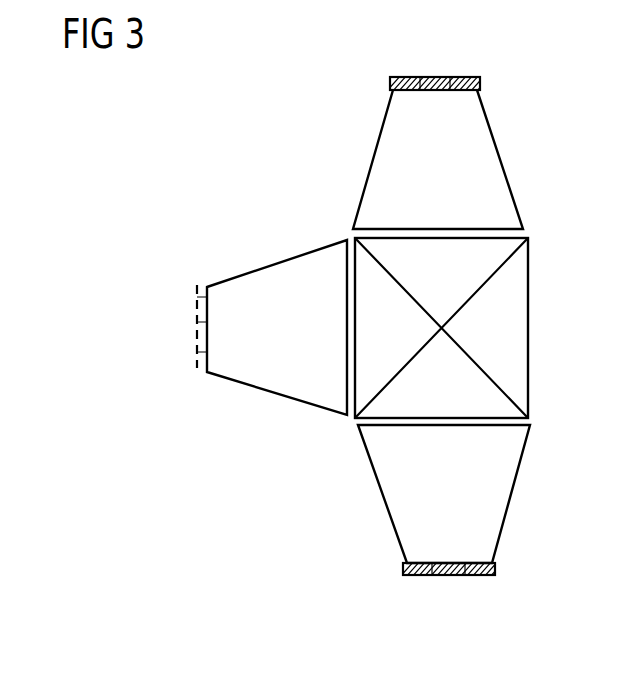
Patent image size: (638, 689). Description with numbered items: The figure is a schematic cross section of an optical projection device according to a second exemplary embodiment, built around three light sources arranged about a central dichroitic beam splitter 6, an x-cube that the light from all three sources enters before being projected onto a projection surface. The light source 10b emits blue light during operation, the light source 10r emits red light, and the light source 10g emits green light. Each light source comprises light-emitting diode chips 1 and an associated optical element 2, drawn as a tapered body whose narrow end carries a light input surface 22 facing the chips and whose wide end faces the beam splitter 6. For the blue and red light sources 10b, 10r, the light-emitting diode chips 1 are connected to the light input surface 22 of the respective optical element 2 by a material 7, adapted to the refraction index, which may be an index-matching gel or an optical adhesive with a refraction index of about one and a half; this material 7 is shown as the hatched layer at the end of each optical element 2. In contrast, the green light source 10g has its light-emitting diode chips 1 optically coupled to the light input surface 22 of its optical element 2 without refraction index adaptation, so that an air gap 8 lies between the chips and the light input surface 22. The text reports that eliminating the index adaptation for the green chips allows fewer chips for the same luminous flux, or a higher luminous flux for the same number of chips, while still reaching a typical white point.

The light-emitting diode chip 1 is at (452, 77).
The optical element 2 is at (492, 149).
The dichroitic beam splitter 6 is at (518, 308).
The material 7 is at (483, 77).
The air gap 8 is at (197, 283).
The light input surface 22 is at (437, 90).
The light source 10b is at (404, 62).
The light source 10g is at (156, 347).
The light source 10r is at (488, 591).